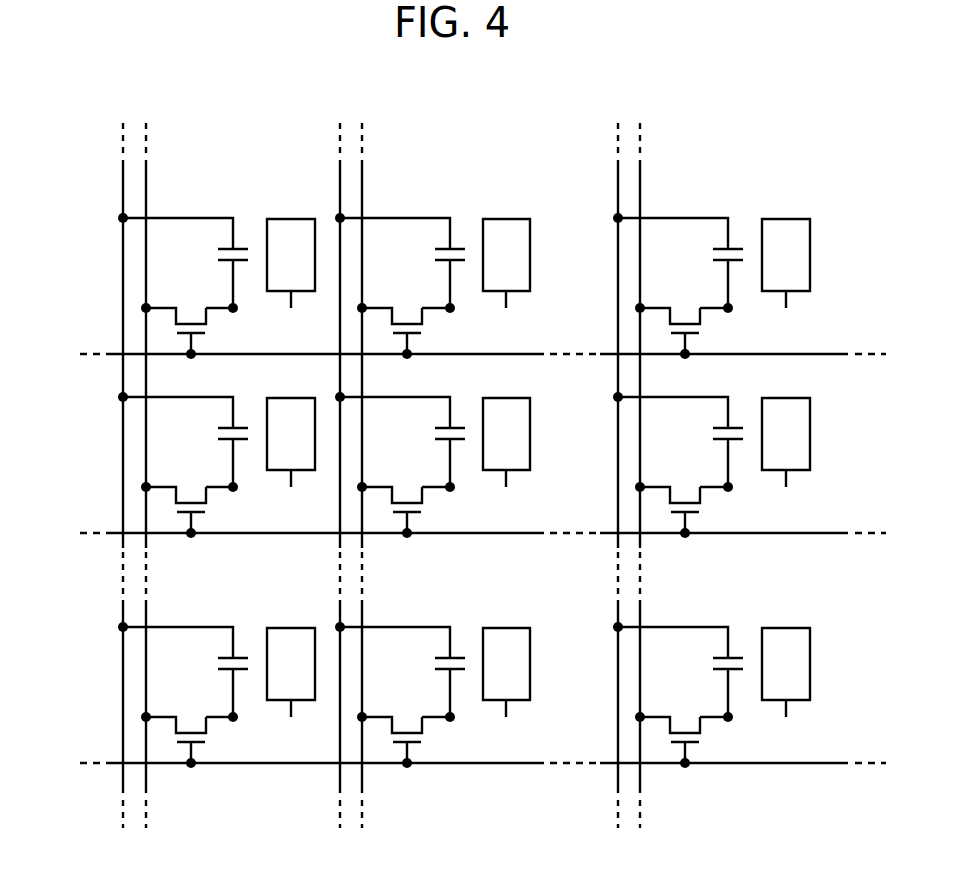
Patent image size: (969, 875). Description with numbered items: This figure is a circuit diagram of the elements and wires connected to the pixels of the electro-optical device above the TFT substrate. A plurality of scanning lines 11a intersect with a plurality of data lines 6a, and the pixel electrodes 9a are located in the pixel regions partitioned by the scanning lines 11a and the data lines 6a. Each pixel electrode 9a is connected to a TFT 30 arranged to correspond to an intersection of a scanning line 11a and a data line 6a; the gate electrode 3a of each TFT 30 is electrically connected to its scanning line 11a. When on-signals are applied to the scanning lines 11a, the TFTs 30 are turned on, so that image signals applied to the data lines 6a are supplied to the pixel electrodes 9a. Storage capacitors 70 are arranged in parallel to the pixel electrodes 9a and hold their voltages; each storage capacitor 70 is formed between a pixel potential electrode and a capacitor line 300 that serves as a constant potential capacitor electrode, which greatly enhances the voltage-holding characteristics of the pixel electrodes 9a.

The capacitor line 300 is at (123, 163).
The data line 6a is at (146, 160).
The scanning line 11a is at (837, 352).
The pixel electrode 9a is at (298, 226).
The storage capacitor 70 is at (209, 257).
The TFT 30 is at (222, 330).
The gate electrode 3a is at (690, 337).